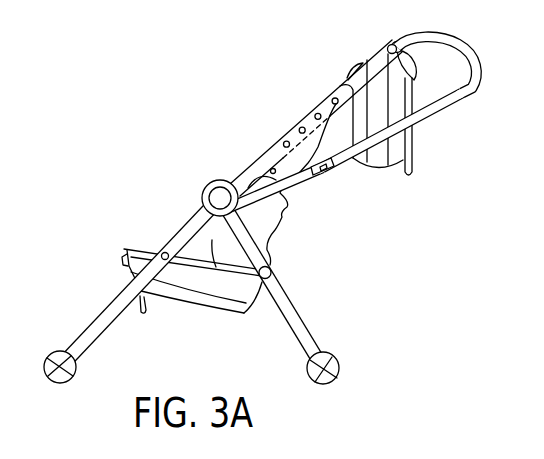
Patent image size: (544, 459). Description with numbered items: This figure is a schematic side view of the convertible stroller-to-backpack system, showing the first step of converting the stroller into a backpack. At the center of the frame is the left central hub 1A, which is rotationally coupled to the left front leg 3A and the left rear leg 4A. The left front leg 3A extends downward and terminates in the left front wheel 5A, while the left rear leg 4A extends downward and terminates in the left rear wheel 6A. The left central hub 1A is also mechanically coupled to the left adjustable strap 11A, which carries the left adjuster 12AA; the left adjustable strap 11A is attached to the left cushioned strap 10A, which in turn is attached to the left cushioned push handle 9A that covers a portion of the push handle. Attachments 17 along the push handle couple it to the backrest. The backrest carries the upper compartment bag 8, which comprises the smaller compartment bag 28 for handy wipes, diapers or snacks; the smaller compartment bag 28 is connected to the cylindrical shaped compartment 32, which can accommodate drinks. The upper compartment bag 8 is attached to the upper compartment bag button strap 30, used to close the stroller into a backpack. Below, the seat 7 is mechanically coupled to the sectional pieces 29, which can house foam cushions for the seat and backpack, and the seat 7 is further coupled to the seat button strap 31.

The left central hub 1A is at (219, 198).
The left front leg 3A is at (177, 236).
The left rear leg 4A is at (298, 319).
The left front wheel 5A is at (75, 372).
The left rear wheel 6A is at (339, 380).
The seat 7 is at (186, 313).
The upper compartment bag 8 is at (379, 184).
The left cushioned push handle 9A is at (465, 43).
The left cushioned strap 10A is at (459, 109).
The left adjustable strap 11A is at (277, 182).
The left adjuster 12AA is at (330, 175).
The attachments 17 is at (298, 128).
The smaller compartment bag 28 is at (355, 115).
The sectional pieces 29 is at (281, 228).
The upper compartment bag button strap 30 is at (412, 172).
The seat button strap 31 is at (144, 314).
The cylindrical shaped compartment 32 is at (375, 93).